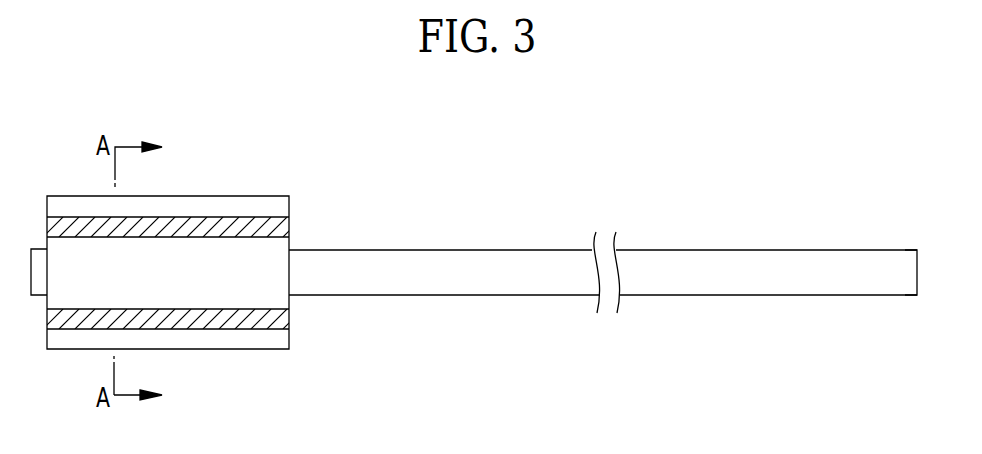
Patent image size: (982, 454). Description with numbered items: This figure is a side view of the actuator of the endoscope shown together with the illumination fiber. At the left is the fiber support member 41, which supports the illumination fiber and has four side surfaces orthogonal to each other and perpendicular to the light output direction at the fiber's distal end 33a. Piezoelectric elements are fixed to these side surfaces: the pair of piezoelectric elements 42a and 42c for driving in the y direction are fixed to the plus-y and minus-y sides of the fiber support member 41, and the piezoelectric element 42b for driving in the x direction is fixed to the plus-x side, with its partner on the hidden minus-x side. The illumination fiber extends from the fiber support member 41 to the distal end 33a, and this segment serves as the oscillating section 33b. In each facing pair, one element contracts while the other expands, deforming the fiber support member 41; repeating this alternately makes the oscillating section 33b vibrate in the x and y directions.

The fiber support member 41 is at (66, 222).
The piezoelectric element 42a is at (236, 206).
The piezoelectric element 42b is at (277, 275).
The piezoelectric element 42c is at (244, 343).
The distal end 33a is at (918, 273).
The oscillating section 33b is at (697, 260).